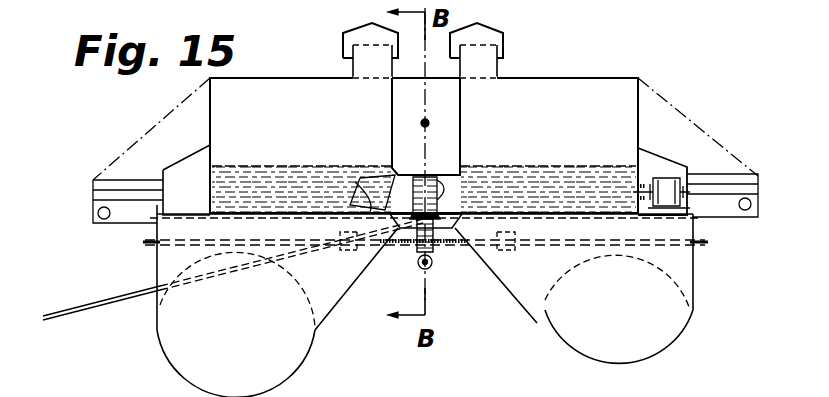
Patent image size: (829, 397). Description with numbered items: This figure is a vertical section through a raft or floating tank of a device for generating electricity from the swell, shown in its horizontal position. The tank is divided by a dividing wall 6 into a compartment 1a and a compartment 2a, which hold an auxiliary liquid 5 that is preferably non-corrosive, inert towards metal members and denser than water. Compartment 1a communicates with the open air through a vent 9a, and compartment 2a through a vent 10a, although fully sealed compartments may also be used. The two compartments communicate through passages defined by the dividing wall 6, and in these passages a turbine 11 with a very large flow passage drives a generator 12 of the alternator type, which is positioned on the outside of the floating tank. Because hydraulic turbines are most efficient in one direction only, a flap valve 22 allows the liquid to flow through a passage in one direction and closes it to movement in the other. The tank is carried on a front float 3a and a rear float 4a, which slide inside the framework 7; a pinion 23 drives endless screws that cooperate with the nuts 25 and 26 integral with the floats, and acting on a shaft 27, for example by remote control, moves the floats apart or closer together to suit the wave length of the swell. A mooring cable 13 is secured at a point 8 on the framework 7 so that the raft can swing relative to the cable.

The compartment 1a is at (248, 95).
The compartment 2a is at (580, 93).
The vent 9a is at (368, 66).
The vent 10a is at (485, 67).
The dividing wall 6 is at (454, 118).
The auxiliary liquid 5 is at (555, 178).
The turbine 11 is at (418, 175).
The flap valve 22 is at (358, 183).
The generator 12 is at (663, 182).
The framework 7 is at (722, 205).
The mooring cable 13 is at (92, 302).
The nut 25 is at (345, 248).
The nut 26 is at (506, 248).
The pinion 23 is at (420, 242).
The securing point 8 is at (432, 222).
The shaft 27 is at (432, 272).
The front float 3a is at (284, 366).
The rear float 4a is at (656, 368).